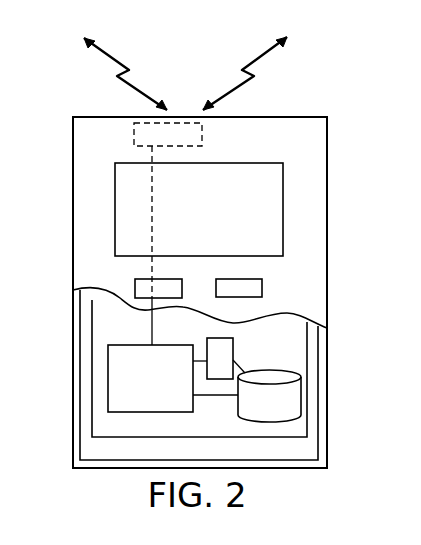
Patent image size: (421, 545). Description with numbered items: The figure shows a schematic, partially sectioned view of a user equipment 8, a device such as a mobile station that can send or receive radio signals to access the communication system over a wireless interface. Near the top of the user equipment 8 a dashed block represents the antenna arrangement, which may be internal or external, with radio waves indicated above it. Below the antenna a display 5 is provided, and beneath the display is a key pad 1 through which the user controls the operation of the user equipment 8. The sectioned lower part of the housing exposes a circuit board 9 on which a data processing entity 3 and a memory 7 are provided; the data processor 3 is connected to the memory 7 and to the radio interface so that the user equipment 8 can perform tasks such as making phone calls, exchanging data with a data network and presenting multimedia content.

The key pad 1 is at (172, 279).
The data processing entity 3 is at (118, 357).
The display 5 is at (274, 175).
The memory 7 is at (296, 413).
The user equipment 8 is at (73, 133).
The circuit board 9 is at (233, 347).